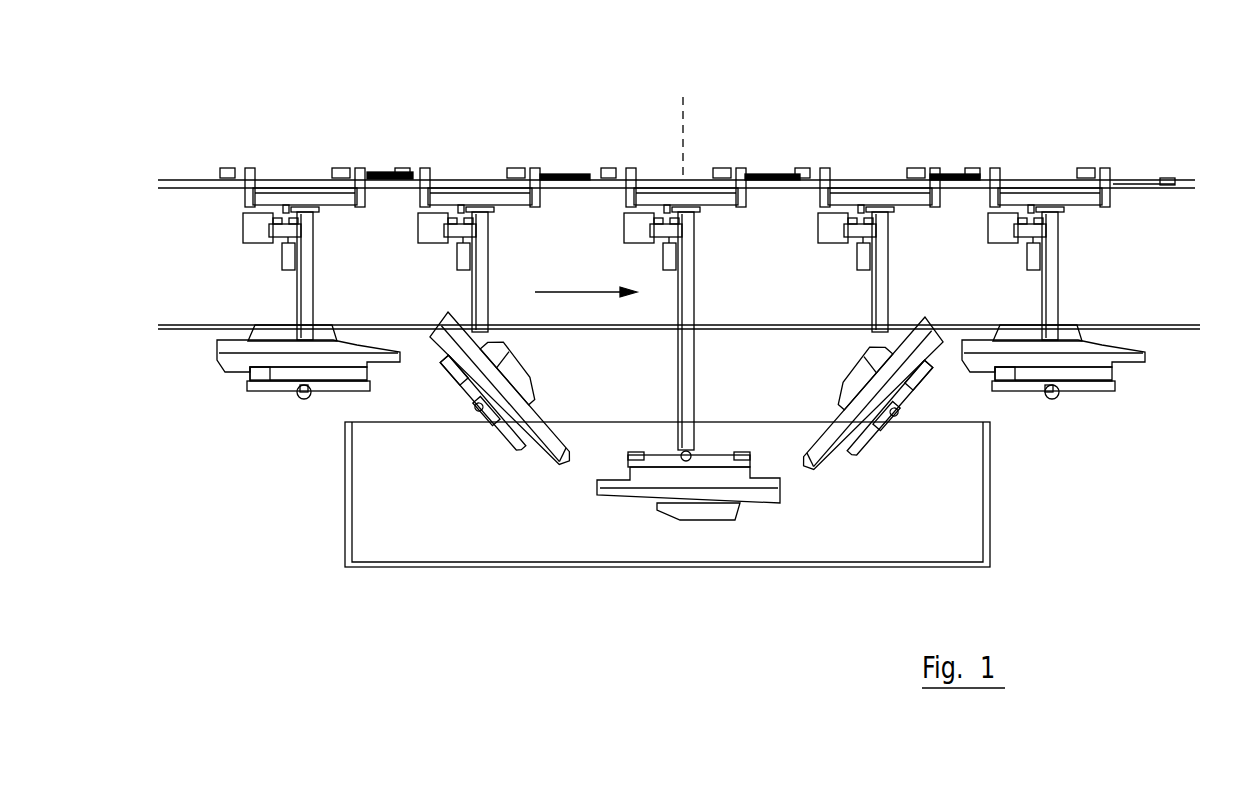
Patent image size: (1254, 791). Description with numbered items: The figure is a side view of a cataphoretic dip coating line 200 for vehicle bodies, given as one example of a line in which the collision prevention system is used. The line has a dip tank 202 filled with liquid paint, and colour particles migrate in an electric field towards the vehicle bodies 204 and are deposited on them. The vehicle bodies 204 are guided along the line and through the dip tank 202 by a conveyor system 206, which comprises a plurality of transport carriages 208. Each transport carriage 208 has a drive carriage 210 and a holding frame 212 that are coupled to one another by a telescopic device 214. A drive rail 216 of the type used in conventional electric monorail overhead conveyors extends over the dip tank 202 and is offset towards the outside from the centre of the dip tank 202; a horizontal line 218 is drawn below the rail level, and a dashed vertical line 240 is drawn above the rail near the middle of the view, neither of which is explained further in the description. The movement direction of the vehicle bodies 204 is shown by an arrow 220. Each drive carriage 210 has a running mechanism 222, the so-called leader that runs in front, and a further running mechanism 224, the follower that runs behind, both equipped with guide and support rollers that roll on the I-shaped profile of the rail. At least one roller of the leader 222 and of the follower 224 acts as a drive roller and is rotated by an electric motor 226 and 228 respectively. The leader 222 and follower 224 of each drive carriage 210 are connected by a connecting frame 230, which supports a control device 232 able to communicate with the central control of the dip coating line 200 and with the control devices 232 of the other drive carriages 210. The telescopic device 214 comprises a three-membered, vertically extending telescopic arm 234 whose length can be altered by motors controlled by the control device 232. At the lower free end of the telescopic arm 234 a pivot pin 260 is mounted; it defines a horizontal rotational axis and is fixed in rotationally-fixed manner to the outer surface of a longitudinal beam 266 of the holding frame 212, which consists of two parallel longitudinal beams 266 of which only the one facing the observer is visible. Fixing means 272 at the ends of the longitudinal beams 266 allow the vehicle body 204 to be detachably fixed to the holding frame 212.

The cataphoretic dip coating line 200 is at (256, 471).
The dip tank 202 is at (1005, 546).
The vehicle body 204 is at (236, 372).
The conveyor system 206 is at (864, 165).
The transport carriage 208 is at (324, 267).
The drive carriage 210 is at (287, 190).
The holding frame 212 is at (325, 396).
The telescopic device 214 is at (280, 298).
The drive rail 216 is at (772, 183).
The cover plate 218 is at (755, 326).
The movement direction 220 is at (590, 292).
The running mechanism (leader) 222 is at (540, 193).
The running mechanism (follower) 224 is at (407, 167).
The electric motor 226 is at (335, 167).
The electric motor 228 is at (224, 166).
The connecting frame 230 is at (472, 207).
The control device 232 is at (252, 232).
The telescopic arm 234 is at (322, 294).
The axis 240 is at (683, 112).
The pivot pin 260 is at (298, 394).
The longitudinal beam 266 is at (500, 433).
The fixing means 272 is at (437, 367).